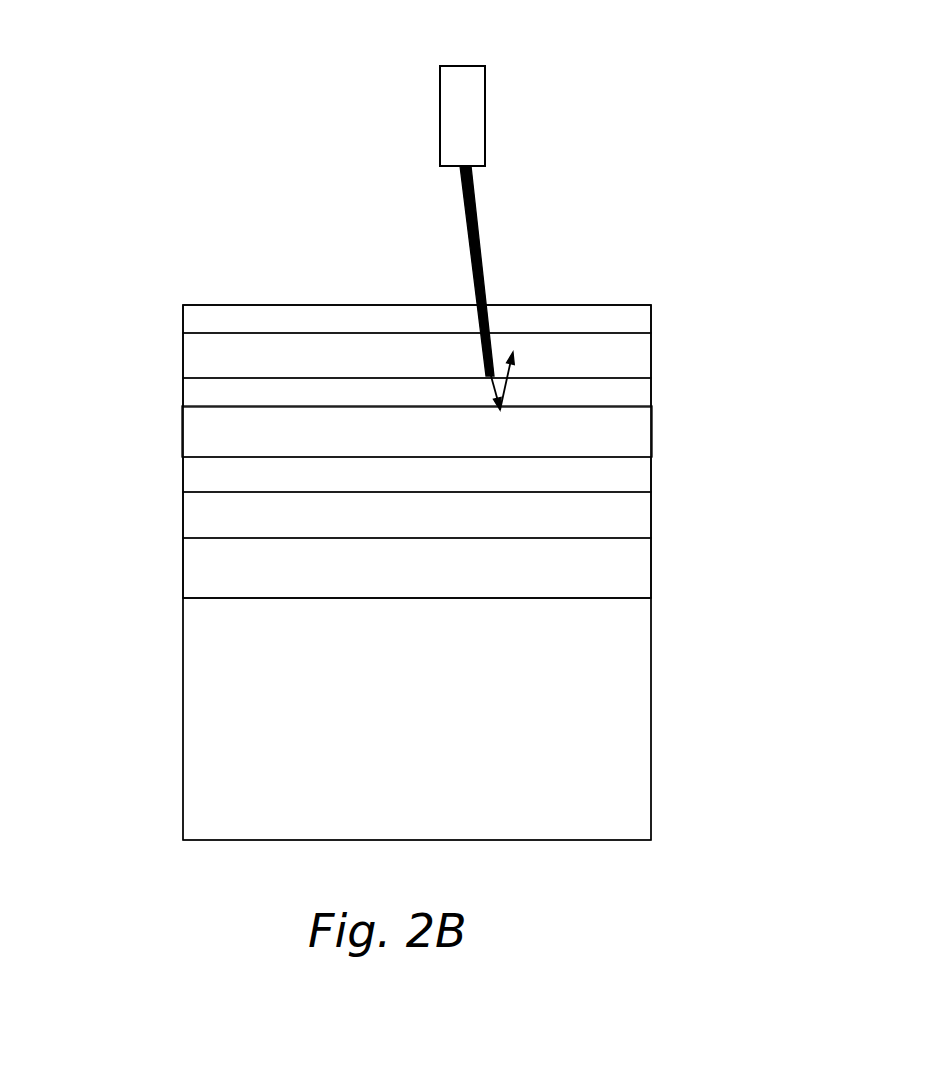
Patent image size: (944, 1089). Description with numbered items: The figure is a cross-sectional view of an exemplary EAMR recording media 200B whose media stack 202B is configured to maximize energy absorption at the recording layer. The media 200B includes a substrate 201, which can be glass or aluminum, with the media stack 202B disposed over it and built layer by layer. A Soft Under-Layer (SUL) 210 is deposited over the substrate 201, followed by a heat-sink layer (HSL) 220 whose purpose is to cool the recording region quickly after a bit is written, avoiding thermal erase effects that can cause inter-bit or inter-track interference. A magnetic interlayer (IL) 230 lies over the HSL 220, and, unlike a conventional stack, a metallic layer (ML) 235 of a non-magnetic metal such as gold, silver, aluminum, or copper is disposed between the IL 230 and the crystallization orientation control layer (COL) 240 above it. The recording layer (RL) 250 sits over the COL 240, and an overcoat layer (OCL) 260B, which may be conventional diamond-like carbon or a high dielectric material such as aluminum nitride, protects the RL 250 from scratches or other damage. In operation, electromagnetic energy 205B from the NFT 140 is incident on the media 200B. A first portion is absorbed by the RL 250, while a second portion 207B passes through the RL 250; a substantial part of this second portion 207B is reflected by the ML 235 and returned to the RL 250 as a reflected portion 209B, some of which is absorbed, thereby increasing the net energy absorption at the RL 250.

The NFT 140 is at (473, 66).
The EAMR recording media 200B is at (647, 278).
The substrate 201 is at (279, 726).
The media stack 202B is at (167, 305).
The electromagnetic energy 205B is at (472, 198).
The second portion of the incident energy 207B is at (490, 397).
The reflected portion of the incident energy 209B is at (512, 373).
The Soft Under-Layer (SUL) 210 is at (272, 579).
The heat-sink layer (HSL) 220 is at (272, 526).
The magnetic interlayer (IL) 230 is at (271, 477).
The metallic layer (ML) 235 is at (271, 437).
The crystallization orientation control layer (COL) 240 is at (271, 404).
The recording layer (RL) 250 is at (271, 366).
The overcoat layer (OCL) 260B is at (278, 331).